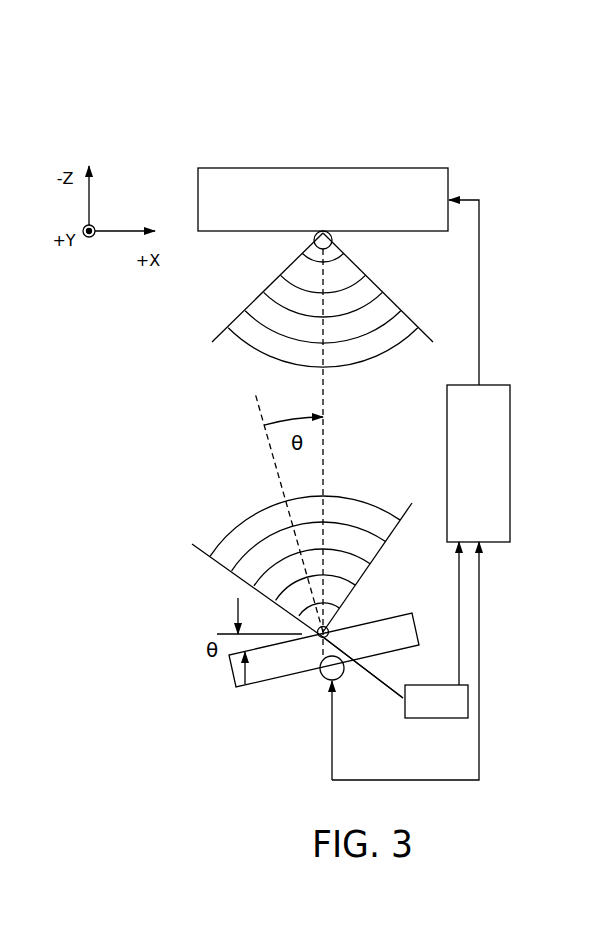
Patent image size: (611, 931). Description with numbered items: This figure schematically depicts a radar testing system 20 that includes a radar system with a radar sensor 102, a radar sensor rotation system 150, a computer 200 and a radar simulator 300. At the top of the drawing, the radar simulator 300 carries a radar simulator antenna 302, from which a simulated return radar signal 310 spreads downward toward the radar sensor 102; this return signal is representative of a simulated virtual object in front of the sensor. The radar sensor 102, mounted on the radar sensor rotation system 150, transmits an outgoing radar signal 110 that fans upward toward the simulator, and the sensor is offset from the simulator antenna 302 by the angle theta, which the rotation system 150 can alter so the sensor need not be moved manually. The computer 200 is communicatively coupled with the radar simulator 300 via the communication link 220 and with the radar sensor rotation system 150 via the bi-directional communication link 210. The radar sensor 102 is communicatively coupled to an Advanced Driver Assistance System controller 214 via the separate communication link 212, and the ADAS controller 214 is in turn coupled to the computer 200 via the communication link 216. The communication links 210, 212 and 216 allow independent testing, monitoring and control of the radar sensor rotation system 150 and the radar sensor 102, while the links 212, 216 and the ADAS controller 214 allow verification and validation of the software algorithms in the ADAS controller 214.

The system 20 is at (447, 115).
The radar simulator 300 is at (449, 175).
The radar simulator antenna 302 is at (334, 240).
The return radar signal 310 is at (360, 366).
The communication link 220 is at (481, 238).
The computer 200 is at (511, 452).
The outgoing radar signal 110 is at (370, 505).
The radar sensor 102 is at (330, 627).
The communication link 212 is at (375, 672).
The communication link 216 is at (458, 620).
The bi-directional communication link 210 is at (481, 620).
The radar sensor rotation system 150 is at (325, 695).
The ADAS controller 214 is at (440, 720).